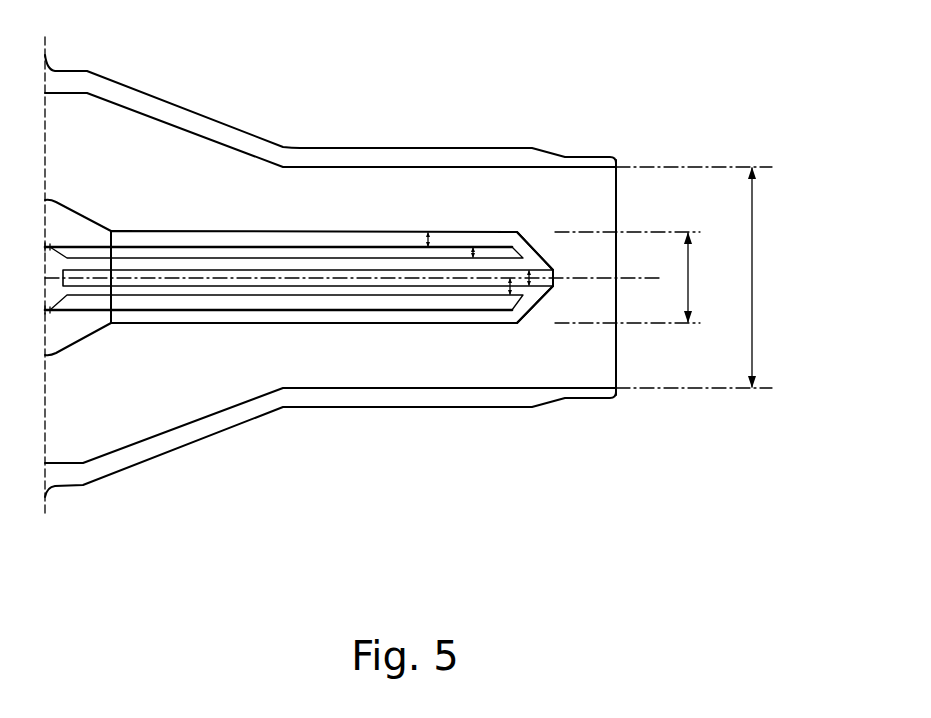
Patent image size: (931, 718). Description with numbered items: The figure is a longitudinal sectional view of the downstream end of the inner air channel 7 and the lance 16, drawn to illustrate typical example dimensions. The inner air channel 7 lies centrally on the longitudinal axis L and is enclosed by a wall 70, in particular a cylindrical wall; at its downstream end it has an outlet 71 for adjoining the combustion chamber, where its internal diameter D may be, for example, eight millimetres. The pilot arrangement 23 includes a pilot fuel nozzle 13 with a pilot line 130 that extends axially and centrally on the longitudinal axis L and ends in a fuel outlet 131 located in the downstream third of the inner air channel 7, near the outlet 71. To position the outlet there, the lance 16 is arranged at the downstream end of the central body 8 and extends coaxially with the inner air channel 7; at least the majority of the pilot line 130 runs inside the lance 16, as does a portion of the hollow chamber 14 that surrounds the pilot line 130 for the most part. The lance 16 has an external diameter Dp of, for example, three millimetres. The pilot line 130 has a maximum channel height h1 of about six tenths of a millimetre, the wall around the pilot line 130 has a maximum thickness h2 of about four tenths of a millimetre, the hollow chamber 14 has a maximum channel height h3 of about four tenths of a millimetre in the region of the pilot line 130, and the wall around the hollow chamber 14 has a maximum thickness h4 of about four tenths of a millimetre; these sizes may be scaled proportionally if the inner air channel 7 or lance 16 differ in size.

The inner air channel 7 is at (184, 100).
The central body 8 is at (81, 205).
The pilot fuel nozzle 13 is at (302, 337).
The hollow chamber 14 is at (332, 312).
The lance 16 is at (290, 238).
The pilot arrangement 23 is at (131, 218).
The wall 70 is at (252, 153).
The outlet 71 is at (618, 198).
The pilot line 130 is at (410, 288).
The fuel outlet 131 is at (557, 273).
The maximum channel height of the pilot line h1 is at (532, 279).
The maximum thickness of the wall around the pilot line h2 is at (511, 290).
The maximum channel height of the hollow chamber h3 is at (472, 248).
The maximum thickness of the wall around the hollow chamber h4 is at (427, 234).
The longitudinal axis L is at (625, 278).
The external diameter of the lance Dp is at (704, 277).
The internal diameter of the inner air channel D is at (762, 277).